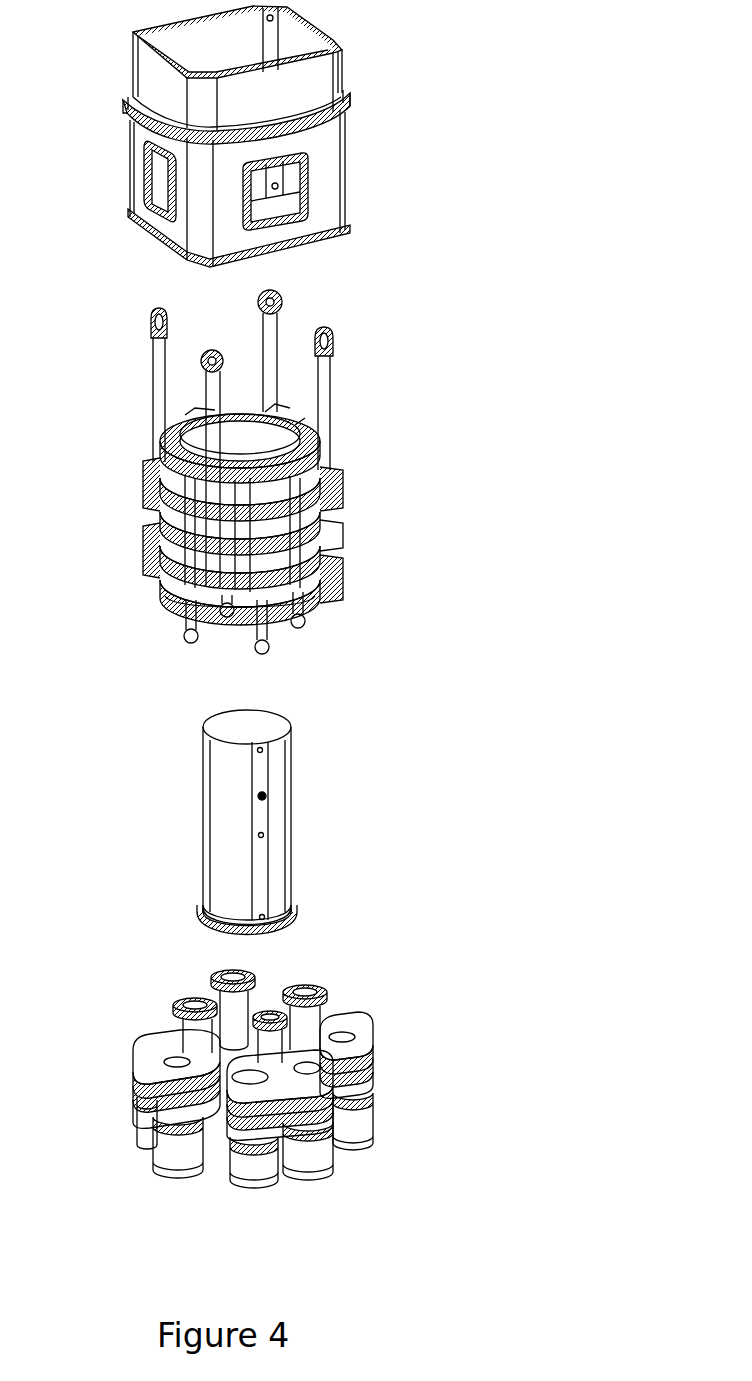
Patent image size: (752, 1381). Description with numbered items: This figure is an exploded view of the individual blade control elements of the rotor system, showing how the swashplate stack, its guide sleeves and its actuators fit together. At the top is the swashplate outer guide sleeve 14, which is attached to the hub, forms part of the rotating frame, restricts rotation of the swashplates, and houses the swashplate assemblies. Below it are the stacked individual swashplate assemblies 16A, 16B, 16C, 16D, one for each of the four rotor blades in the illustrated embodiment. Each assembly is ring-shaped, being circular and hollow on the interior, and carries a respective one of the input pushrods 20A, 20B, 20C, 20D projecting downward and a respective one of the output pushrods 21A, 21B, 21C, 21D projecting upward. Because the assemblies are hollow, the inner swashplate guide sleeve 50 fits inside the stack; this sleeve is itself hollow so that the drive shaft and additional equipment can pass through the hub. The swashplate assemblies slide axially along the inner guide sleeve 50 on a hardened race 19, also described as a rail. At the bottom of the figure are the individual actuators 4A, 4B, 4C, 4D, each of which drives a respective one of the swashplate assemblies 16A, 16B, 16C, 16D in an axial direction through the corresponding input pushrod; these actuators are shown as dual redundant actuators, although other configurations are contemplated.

The swashplate outer guide sleeve 14 is at (346, 190).
The output pushrod 21A is at (200, 361).
The output pushrod 21B is at (150, 318).
The output pushrod 21C is at (283, 299).
The output pushrod 21D is at (334, 343).
The swashplate assembly 16A is at (330, 534).
The swashplate assembly 16B is at (172, 588).
The swashplate assembly 16C is at (310, 421).
The swashplate assembly 16D is at (156, 487).
The input pushrod 20A is at (226, 619).
The input pushrod 20B is at (308, 620).
The input pushrod 20C is at (272, 655).
The input pushrod 20D is at (186, 641).
The hardened race 19 is at (262, 796).
The inner swashplate guide sleeve 50 is at (300, 822).
The actuator 4A is at (210, 978).
The actuator 4B is at (305, 984).
The actuator 4C is at (295, 1022).
The actuator 4D is at (172, 1006).